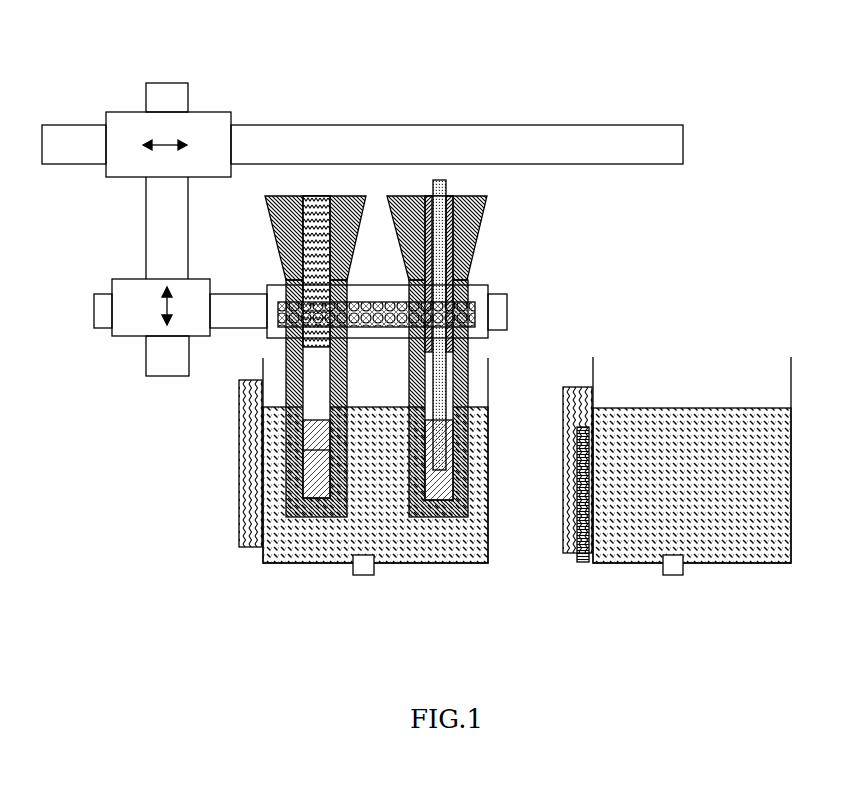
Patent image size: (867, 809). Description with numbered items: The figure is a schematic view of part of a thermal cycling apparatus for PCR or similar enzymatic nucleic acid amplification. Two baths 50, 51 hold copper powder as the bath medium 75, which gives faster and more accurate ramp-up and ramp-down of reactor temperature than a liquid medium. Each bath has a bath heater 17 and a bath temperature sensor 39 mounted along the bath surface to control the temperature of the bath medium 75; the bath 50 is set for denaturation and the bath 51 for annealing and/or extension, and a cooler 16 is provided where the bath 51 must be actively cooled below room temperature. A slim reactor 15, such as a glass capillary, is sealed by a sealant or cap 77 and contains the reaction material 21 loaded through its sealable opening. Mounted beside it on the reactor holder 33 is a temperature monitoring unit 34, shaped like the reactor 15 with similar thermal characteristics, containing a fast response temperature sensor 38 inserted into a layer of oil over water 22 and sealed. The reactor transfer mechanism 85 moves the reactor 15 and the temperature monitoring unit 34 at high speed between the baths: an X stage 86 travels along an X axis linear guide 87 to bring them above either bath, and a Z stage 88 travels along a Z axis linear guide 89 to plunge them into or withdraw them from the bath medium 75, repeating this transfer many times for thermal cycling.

The reactor transfer mechanism 85 is at (403, 115).
The X stage 86 is at (198, 127).
The X axis linear guide 87 is at (663, 145).
The Z stage 88 is at (137, 310).
The Z axis linear guide 89 is at (167, 205).
The reactor holder 33 is at (460, 317).
The sealant or cap 77 is at (317, 213).
The fast response temperature sensor 38 is at (438, 232).
The reactor 15 is at (295, 517).
The reaction material 21 is at (320, 465).
The temperature monitoring unit 34 is at (455, 517).
The layer of oil over water 22 is at (443, 482).
The bath medium 75 is at (362, 427).
The bath heater 17 is at (245, 528).
The cooler 16 is at (583, 565).
The bath temperature sensor 39 is at (365, 575).
The bath 50 is at (400, 565).
The bath 51 is at (773, 565).